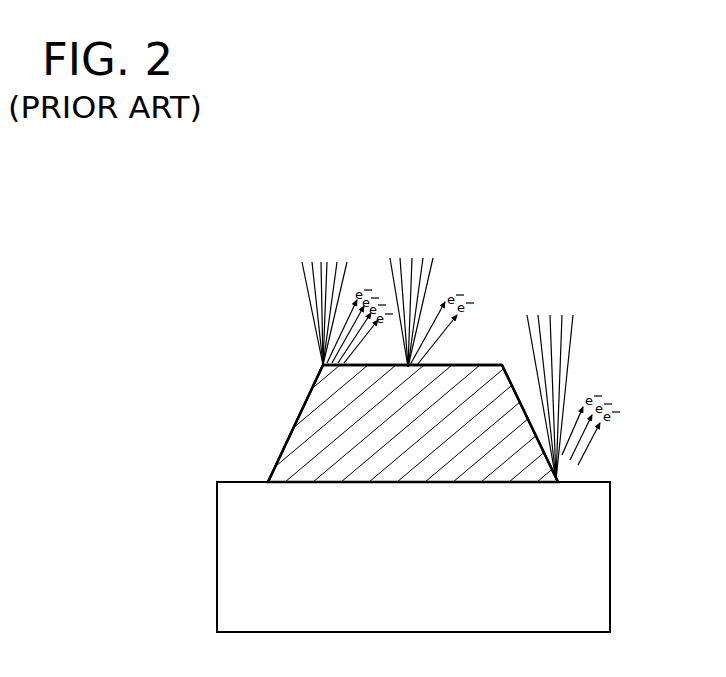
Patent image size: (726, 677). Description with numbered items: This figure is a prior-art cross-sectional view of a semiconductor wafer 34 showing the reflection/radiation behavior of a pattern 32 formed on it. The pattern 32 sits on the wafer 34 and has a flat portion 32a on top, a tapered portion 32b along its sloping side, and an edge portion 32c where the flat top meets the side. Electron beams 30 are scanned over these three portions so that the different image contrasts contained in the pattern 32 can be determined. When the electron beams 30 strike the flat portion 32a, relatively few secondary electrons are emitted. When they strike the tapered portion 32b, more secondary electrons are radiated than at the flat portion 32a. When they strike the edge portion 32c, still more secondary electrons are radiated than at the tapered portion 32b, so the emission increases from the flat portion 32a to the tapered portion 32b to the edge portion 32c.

The electron beams 30 is at (538, 287).
The pattern 32 is at (510, 455).
The flat portion 32a is at (478, 360).
The tapered portion 32b is at (512, 377).
The edge portion 32c is at (318, 368).
The semiconductor wafer 34 is at (610, 562).